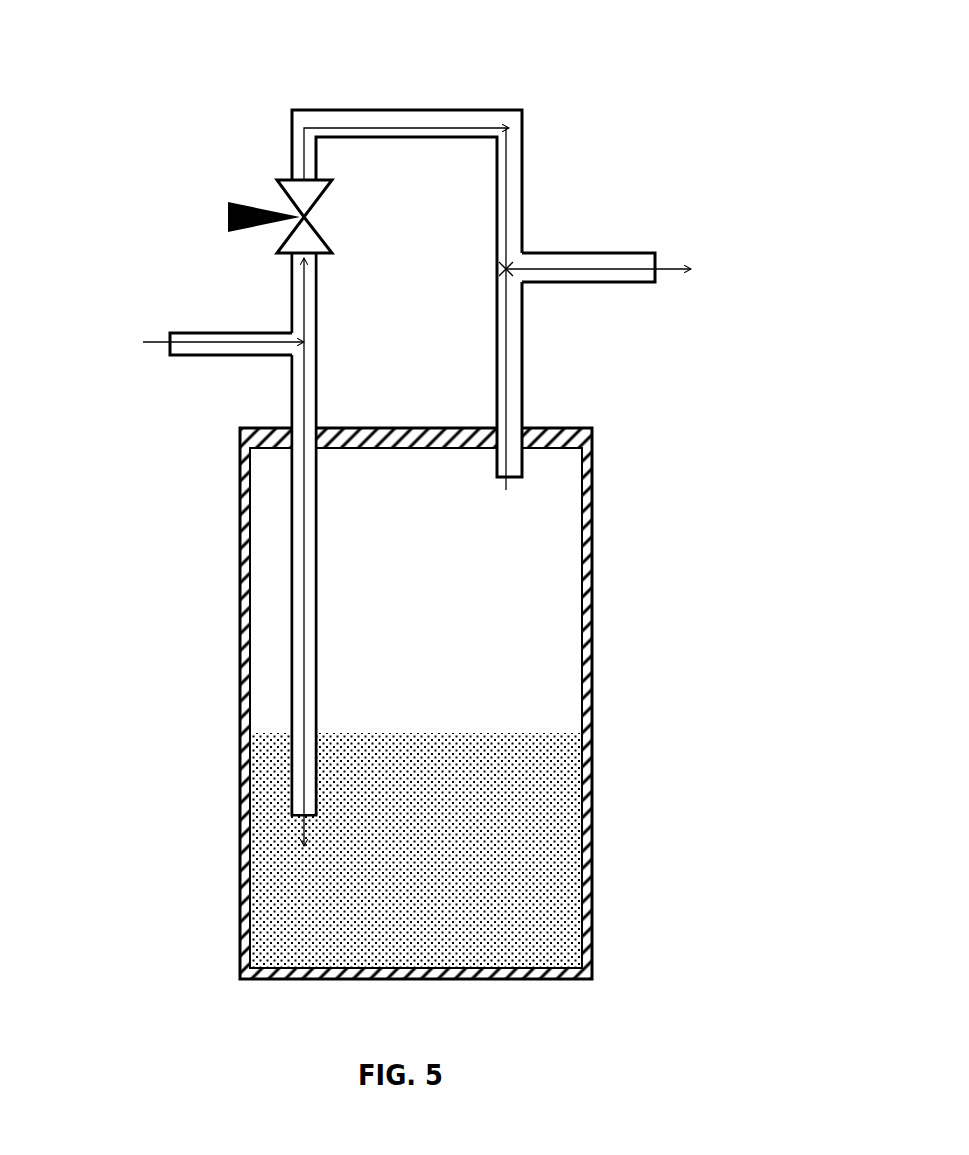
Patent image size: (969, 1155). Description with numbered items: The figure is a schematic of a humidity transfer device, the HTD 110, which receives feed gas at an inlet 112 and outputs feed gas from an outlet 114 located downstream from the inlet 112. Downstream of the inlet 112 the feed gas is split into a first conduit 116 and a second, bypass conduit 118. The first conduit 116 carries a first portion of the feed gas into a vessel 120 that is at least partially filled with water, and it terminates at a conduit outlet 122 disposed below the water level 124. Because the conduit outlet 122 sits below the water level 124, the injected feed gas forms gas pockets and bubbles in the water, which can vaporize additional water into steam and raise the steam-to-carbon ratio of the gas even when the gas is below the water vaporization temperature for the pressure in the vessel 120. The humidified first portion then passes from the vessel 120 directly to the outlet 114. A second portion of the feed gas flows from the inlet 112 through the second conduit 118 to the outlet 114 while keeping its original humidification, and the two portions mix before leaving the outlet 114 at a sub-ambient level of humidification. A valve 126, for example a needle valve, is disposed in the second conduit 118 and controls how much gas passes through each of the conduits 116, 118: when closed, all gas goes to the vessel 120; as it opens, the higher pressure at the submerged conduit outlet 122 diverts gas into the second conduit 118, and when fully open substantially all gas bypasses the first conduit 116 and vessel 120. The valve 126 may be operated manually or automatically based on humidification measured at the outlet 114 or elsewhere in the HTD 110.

The HTD 110 is at (619, 97).
The inlet 112 is at (168, 343).
The outlet 114 is at (655, 253).
The first conduit 116 is at (305, 418).
The second conduit 118 is at (348, 122).
The vessel 120 is at (593, 540).
The conduit outlet 122 is at (290, 818).
The water level 124 is at (482, 735).
The valve 126 is at (302, 190).